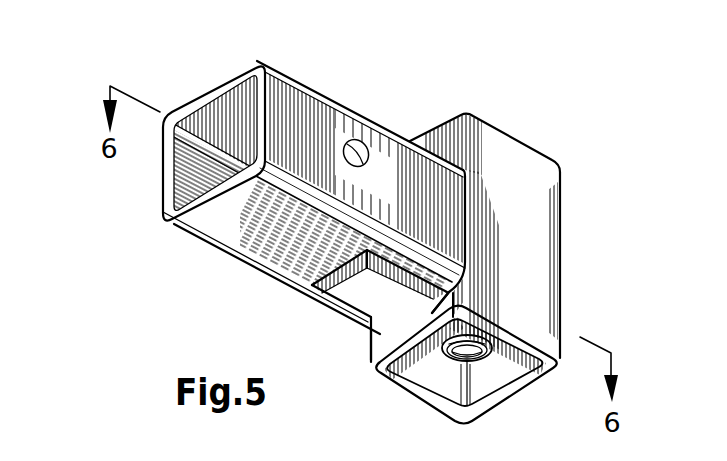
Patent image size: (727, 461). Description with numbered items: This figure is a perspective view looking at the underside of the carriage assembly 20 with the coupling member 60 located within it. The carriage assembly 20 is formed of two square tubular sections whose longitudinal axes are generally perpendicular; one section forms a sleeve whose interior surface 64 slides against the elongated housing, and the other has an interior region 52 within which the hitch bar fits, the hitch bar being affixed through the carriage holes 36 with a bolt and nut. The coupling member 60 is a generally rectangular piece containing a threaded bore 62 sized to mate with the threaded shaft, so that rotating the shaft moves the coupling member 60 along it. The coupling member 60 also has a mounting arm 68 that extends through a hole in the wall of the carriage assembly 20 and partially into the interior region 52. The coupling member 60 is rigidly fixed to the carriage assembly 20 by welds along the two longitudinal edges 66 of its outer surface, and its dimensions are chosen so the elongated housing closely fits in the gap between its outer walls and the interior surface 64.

The carriage assembly 20 is at (446, 91).
The carriage holes 36 is at (360, 139).
The interior region 52 is at (198, 100).
The coupling member 60 is at (447, 421).
The threaded bore 62 is at (455, 362).
The interior surface 64 is at (495, 390).
The longitudinal edges 66 is at (463, 288).
The mounting arm 68 is at (330, 307).